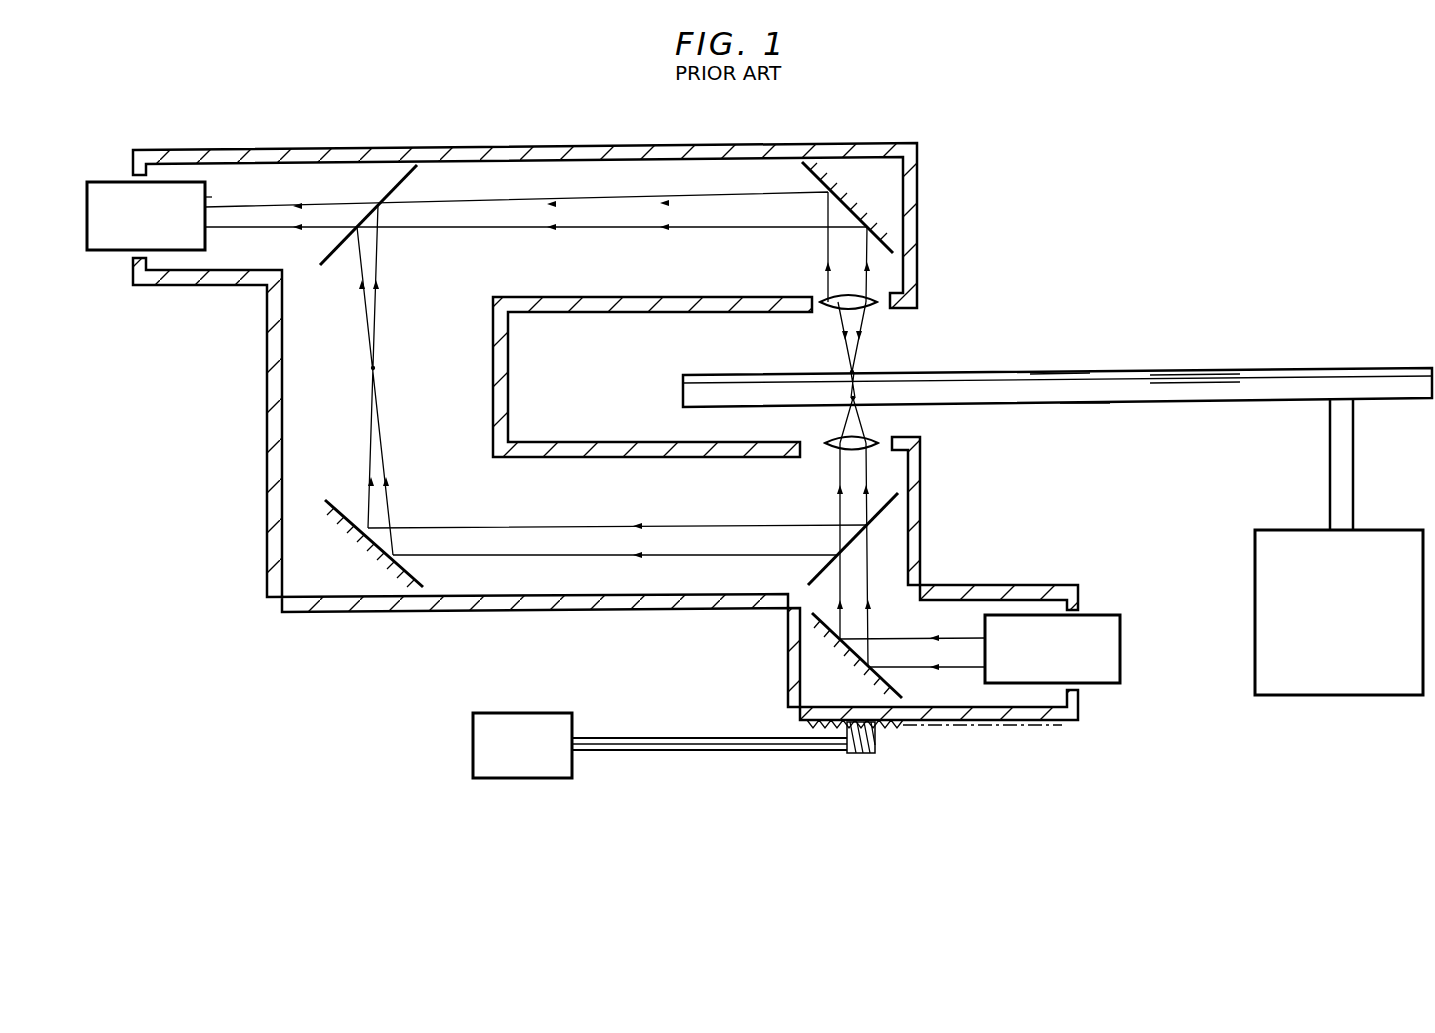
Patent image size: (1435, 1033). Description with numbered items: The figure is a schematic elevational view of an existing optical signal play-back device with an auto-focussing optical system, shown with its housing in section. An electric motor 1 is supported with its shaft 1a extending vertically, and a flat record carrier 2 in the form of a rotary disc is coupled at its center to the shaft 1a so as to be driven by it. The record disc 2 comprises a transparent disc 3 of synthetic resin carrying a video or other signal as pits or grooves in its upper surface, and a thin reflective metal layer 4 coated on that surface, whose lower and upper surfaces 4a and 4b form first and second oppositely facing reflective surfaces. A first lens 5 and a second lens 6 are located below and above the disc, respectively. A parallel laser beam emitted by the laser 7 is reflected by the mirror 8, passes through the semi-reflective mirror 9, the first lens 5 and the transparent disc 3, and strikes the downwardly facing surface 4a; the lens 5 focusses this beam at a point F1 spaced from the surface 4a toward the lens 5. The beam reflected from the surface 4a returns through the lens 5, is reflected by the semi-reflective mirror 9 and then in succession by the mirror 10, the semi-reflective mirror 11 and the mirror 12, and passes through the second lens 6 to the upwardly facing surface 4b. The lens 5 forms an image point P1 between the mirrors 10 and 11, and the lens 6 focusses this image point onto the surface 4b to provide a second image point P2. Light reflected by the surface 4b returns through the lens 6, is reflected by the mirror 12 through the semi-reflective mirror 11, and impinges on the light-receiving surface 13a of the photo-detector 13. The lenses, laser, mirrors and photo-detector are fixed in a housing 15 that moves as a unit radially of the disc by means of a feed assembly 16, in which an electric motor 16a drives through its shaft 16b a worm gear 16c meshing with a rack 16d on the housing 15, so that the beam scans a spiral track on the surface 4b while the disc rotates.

The electric motor 1 is at (1258, 621).
The shaft 1a is at (1330, 509).
The record carrier 2 is at (1234, 356).
The transparent disc 3 is at (1232, 382).
The reflective metal layer 4 is at (1190, 377).
The first reflective surface 4a is at (1083, 383).
The second reflective surface 4b is at (1058, 371).
The first lens 5 is at (870, 445).
The second lens 6 is at (855, 306).
The laser 7 is at (1120, 660).
The mirror 8 is at (812, 617).
The semi-reflective mirror 9 is at (886, 510).
The mirror 10 is at (338, 472).
The semi-reflective mirror 11 is at (322, 262).
The mirror 12 is at (885, 250).
The photo-detector 13 is at (113, 253).
The light-receiving surface 13a is at (270, 204).
The housing 15 is at (268, 460).
The feed assembly 16 is at (767, 759).
The electric motor 16a is at (545, 770).
The shaft 16b is at (748, 794).
The worm gear 16c is at (863, 755).
The rack 16d is at (880, 728).
The image point P1 is at (370, 368).
The second image point P2 is at (850, 371).
The focus point F1 is at (880, 398).